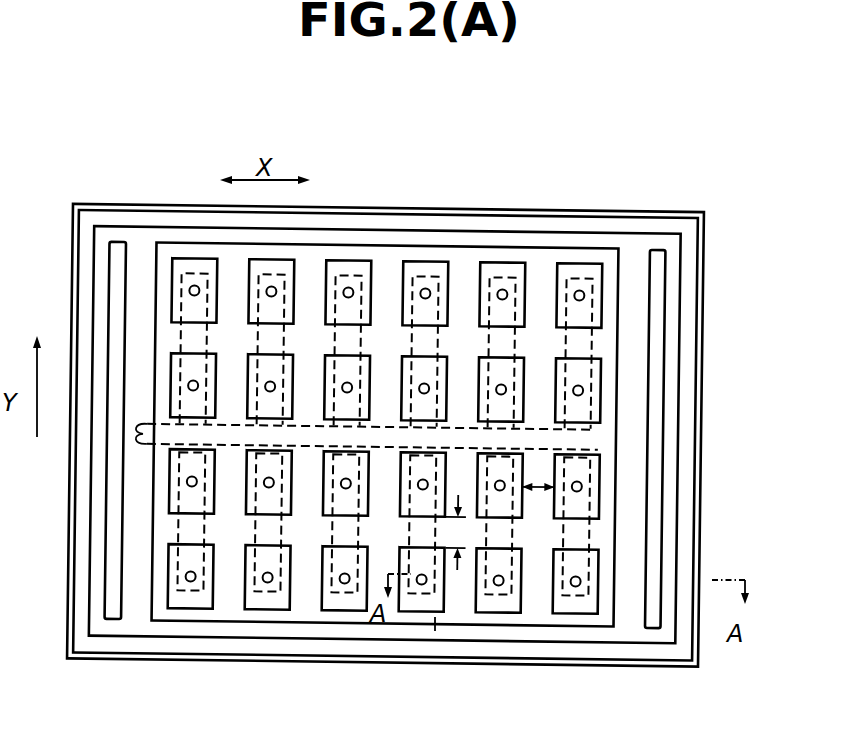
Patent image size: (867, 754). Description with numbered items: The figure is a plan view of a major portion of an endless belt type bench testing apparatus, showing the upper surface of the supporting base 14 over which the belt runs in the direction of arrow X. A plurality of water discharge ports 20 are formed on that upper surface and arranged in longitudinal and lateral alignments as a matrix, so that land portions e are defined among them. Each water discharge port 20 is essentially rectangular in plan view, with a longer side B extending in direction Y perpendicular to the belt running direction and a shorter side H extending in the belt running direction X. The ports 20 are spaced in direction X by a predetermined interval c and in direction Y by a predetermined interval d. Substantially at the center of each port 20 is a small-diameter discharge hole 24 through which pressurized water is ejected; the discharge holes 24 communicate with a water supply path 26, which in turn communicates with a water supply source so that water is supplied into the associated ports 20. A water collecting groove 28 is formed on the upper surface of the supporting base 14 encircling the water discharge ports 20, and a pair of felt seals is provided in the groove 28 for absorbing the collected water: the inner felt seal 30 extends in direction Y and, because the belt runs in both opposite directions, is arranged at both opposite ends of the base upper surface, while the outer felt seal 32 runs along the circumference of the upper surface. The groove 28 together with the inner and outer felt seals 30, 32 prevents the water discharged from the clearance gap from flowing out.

The supporting base 14 is at (459, 203).
The water collecting groove 28 is at (635, 251).
The outer felt seal 32 is at (685, 286).
The inner felt seal 30 is at (653, 393).
The discharge hole 24 is at (582, 486).
The water discharge port 20 is at (587, 611).
The water supply path 26 is at (137, 447).
The shorter side H is at (265, 609).
The longer side B is at (292, 590).
The land portion e is at (459, 610).
The predetermined interval in direction X c is at (538, 476).
The predetermined interval in direction Y d is at (455, 532).